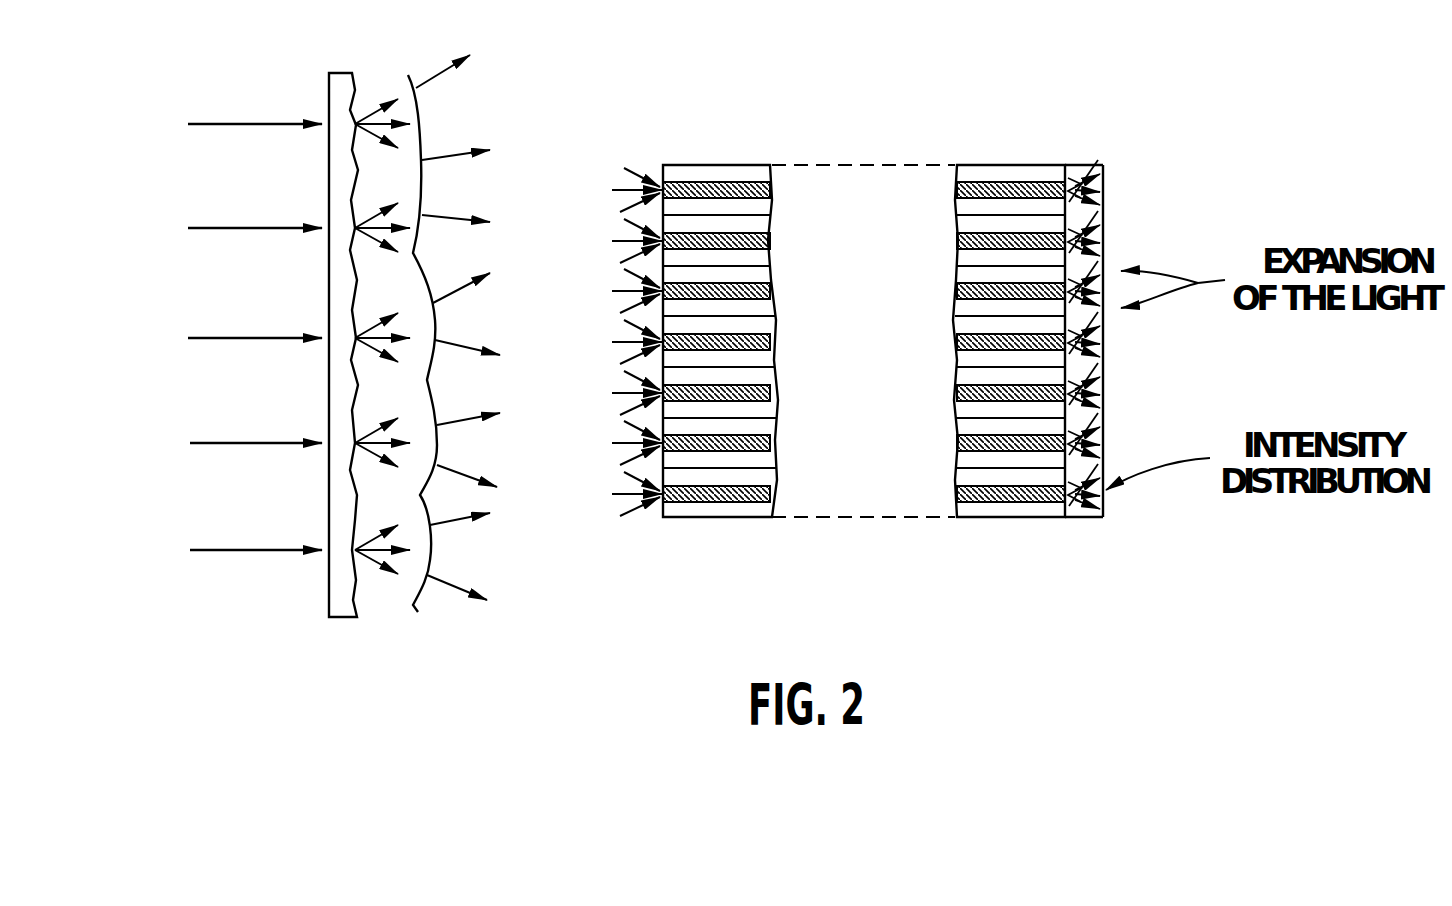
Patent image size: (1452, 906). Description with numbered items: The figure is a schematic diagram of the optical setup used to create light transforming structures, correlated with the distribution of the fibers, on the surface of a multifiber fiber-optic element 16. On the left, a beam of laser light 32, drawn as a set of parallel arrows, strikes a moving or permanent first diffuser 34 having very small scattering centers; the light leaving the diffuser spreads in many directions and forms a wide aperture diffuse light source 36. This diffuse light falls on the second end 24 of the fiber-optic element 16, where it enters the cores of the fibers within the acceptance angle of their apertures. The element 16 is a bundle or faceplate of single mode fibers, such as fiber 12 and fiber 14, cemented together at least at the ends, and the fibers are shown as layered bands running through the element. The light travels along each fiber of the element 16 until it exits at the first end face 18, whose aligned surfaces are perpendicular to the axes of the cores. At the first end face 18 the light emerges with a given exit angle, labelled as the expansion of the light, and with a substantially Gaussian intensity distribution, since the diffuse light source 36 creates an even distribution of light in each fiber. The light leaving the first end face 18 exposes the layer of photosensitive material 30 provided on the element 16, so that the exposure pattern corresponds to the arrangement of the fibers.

The fiber 12 is at (980, 508).
The fiber 14 is at (1026, 462).
The multifiber fiber-optic element 16 is at (863, 341).
The first end face 18 is at (1062, 164).
The second end 24 is at (660, 172).
The photosensitive layer 30 is at (1105, 202).
The beam of laser light 32 is at (255, 337).
The first diffuser 34 is at (363, 322).
The diffuse light source 36 is at (450, 313).